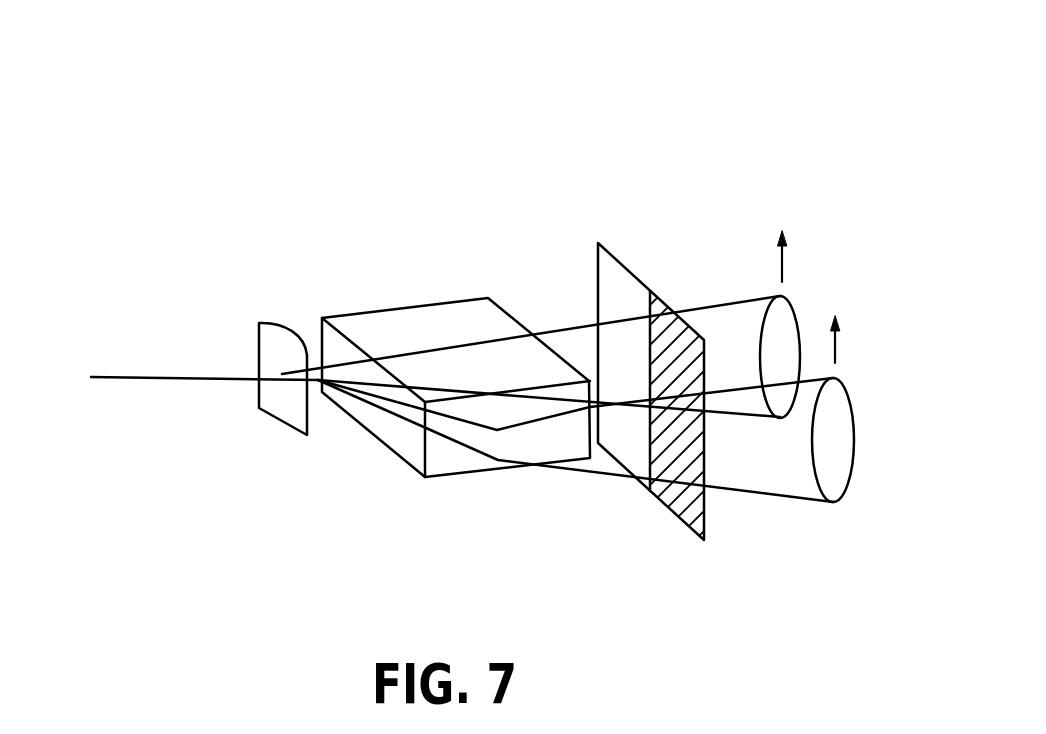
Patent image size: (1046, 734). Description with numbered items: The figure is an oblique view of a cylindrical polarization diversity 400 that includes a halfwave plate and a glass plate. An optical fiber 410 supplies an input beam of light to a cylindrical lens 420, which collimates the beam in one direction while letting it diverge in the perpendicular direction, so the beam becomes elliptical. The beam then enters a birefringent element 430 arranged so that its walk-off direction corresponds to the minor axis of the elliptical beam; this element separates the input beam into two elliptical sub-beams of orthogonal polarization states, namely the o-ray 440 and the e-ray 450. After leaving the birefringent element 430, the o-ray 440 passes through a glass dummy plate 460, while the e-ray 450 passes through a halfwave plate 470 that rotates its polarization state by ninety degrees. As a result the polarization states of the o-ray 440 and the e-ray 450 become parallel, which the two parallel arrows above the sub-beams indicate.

The cylindrical polarization diversity 400 is at (318, 100).
The optical fiber 410 is at (121, 378).
The cylindrical lens 420 is at (277, 415).
The birefringent element 430 is at (370, 308).
The o-ray 440 is at (452, 392).
The e-ray 450 is at (854, 420).
The glass dummy plate 460 is at (614, 258).
The halfwave plate 470 is at (707, 505).